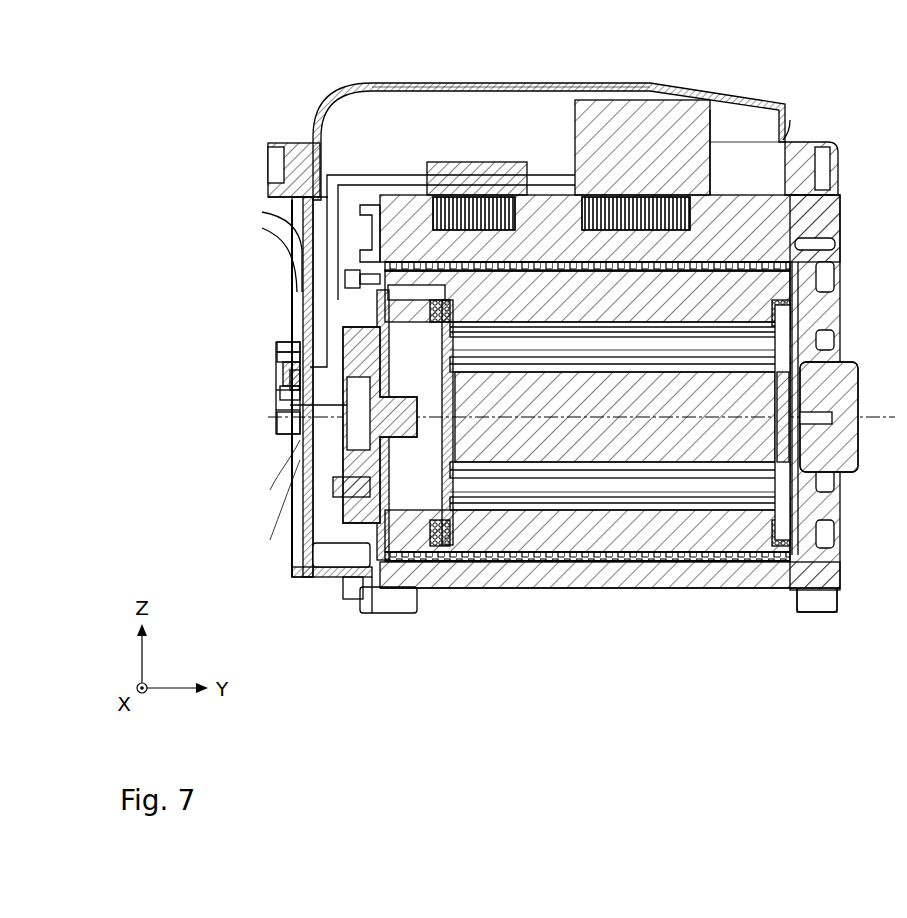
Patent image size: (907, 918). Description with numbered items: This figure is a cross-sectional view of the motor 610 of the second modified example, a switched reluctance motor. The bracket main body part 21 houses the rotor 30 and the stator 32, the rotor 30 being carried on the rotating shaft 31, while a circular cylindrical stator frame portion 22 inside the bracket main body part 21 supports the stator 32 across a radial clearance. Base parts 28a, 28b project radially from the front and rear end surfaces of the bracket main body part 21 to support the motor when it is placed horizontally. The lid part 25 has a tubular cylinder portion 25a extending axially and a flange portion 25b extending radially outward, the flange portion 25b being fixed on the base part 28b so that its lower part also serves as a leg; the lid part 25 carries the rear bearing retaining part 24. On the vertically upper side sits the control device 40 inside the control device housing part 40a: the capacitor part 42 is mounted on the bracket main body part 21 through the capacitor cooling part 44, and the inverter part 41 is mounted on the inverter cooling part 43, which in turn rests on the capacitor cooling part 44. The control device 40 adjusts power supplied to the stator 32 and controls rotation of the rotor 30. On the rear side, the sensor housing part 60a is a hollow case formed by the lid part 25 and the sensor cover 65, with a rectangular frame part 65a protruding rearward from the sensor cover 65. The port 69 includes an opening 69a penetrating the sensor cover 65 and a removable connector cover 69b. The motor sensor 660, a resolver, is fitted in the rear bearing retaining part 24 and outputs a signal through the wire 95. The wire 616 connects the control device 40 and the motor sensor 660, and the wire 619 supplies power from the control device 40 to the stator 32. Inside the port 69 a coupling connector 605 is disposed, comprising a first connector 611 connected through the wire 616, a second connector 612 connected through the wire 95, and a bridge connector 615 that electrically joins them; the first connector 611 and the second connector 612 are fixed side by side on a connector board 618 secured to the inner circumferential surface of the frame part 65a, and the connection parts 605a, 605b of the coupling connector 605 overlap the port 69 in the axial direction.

The bracket main body part 21 is at (530, 590).
The stator frame portion 22 is at (587, 556).
The rear bearing retaining part 24 is at (300, 495).
The lid part 25 is at (340, 628).
The cylinder portion 25a is at (330, 588).
The flange portion 25b is at (375, 588).
The base part 28a is at (395, 614).
The base part 28b is at (816, 612).
The rotor 30 is at (705, 500).
The rotating shaft 31 is at (790, 420).
The stator 32 is at (641, 546).
The control device 40 is at (652, 92).
The control device housing part 40a is at (535, 84).
The inverter part 41 is at (487, 190).
The capacitor part 42 is at (680, 118).
The inverter cooling part 43 is at (440, 195).
The capacitor cooling part 44 is at (750, 192).
The sensor housing part 60a is at (290, 547).
The sensor cover 65 is at (305, 588).
The frame part 65a is at (285, 352).
The port 69 is at (199, 317).
The opening 69a is at (278, 356).
The connector cover 69b is at (278, 350).
The wire 95 is at (300, 455).
The coupling connector 605 is at (274, 360).
The connection part 605a is at (276, 402).
The connection part 605b is at (292, 430).
The motor 610 is at (824, 140).
The first connector 611 is at (292, 340).
The second connector 612 is at (290, 410).
The bridge connector 615 is at (282, 390).
The wire 616 is at (300, 245).
The connector board 618 is at (278, 382).
The wire 619 is at (300, 196).
The motor sensor 660 is at (300, 470).